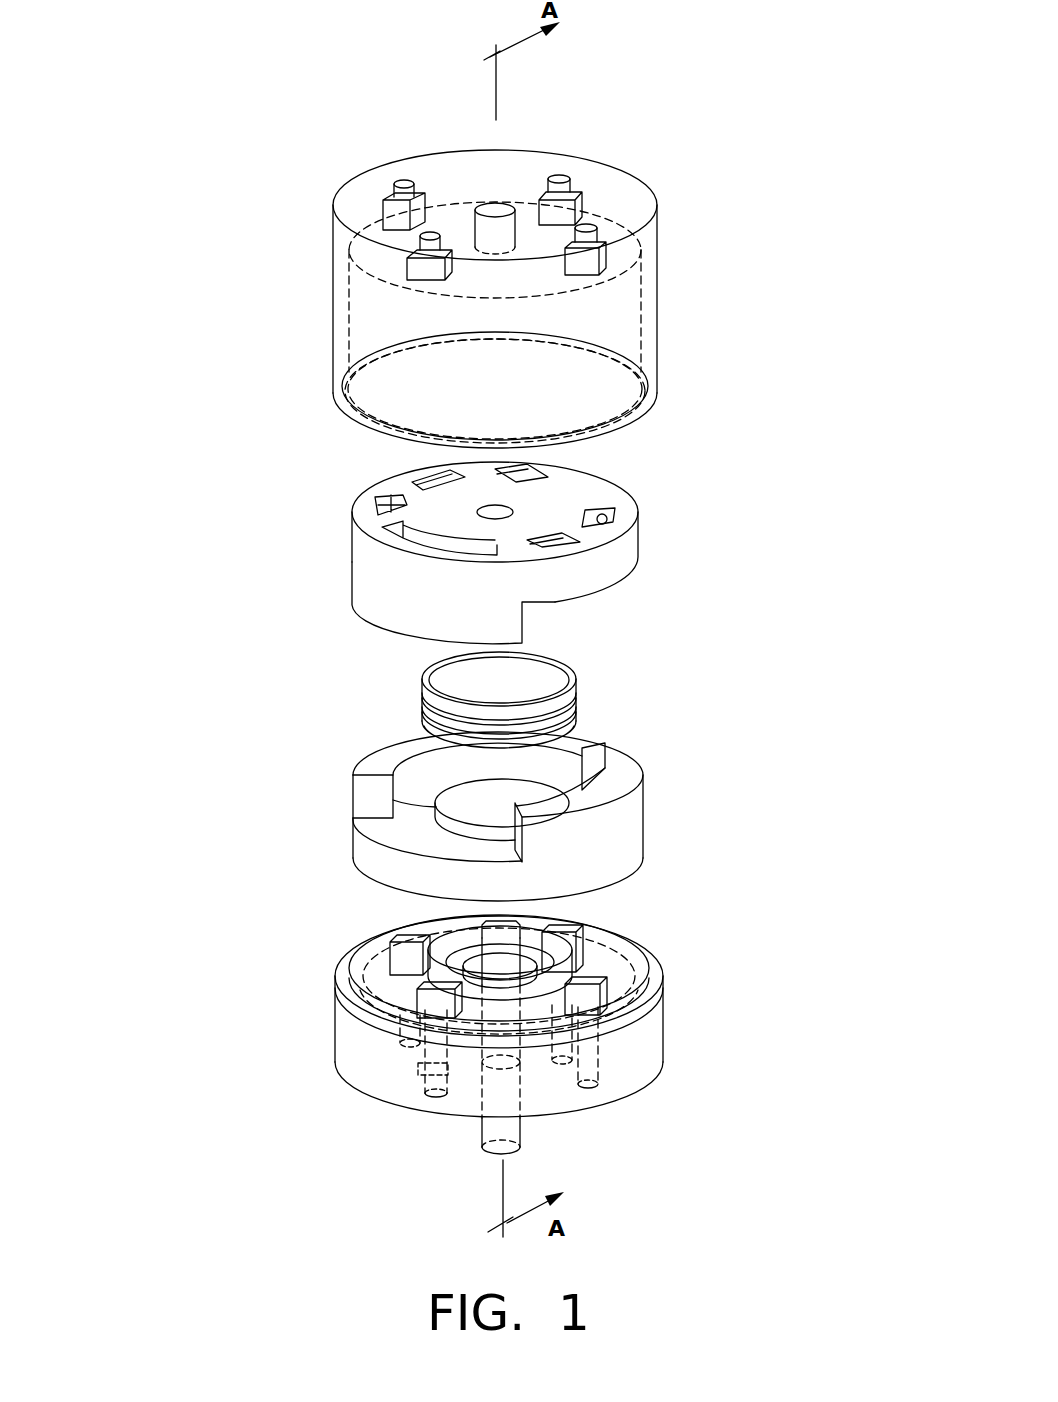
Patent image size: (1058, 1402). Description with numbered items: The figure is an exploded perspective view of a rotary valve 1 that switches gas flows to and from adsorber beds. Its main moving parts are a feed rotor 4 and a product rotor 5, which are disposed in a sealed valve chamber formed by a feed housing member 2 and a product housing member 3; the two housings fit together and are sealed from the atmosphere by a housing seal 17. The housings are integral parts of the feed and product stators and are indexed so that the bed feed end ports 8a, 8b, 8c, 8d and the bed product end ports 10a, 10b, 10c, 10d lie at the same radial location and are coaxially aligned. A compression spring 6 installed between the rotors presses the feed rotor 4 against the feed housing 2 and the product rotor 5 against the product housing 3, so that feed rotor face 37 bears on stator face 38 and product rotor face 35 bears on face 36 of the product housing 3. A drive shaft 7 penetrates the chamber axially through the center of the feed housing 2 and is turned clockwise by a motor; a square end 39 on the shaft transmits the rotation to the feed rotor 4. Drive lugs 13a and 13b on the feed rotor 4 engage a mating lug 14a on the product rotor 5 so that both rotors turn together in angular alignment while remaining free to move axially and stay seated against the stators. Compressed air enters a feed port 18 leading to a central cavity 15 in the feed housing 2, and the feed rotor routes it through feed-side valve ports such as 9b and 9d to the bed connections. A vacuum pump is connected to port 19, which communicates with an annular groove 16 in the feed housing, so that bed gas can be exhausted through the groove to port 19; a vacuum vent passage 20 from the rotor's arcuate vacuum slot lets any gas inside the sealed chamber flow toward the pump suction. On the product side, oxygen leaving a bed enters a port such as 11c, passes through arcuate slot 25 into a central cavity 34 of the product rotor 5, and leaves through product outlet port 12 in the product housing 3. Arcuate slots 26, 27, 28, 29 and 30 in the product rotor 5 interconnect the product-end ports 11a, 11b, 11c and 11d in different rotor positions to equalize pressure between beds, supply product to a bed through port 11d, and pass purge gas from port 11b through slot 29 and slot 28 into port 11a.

The rotary valve 1 is at (238, 602).
The feed housing member 2 is at (355, 1093).
The product housing member 3 is at (333, 354).
The feed rotor 4 is at (373, 851).
The product rotor 5 is at (552, 582).
The compression spring 6 is at (578, 667).
The drive shaft 7 is at (480, 1137).
The bed feed end port 8a is at (594, 1092).
The bed feed end port 8b is at (595, 1087).
The bed feed end port 8c is at (435, 1100).
The bed feed end port 8d is at (402, 1045).
The port in feed housing 9b is at (607, 977).
The port in feed housing 9d is at (407, 940).
The bed product end port 10a is at (560, 178).
The bed product end port 10b is at (584, 226).
The bed product end port 10c is at (420, 235).
The bed product end port 10d is at (400, 179).
The valve port in product housing 11a is at (580, 193).
The valve port in product housing 11b is at (575, 251).
The valve port in product housing 11c is at (407, 258).
The valve port in product housing 11d is at (383, 205).
The product outlet port 12 is at (494, 206).
The drive lug 13a is at (368, 802).
The drive lug 13b is at (623, 760).
The mating lug 14a is at (403, 595).
The central cavity 15 is at (550, 950).
The annular groove 16 is at (572, 955).
The housing seal 17 is at (350, 998).
The feed port 18 is at (577, 978).
The vacuum port 19 is at (418, 1057).
The vacuum vent passage 20 is at (550, 783).
The arcuate slot 25 is at (403, 527).
The arcuate slot 26 is at (380, 505).
The arcuate slot 27 is at (432, 480).
The arcuate slot 28 is at (543, 473).
The arcuate slot 29 is at (603, 519).
The arcuate slot 30 is at (573, 540).
The central cavity 34 is at (567, 513).
The product rotor face 35 is at (515, 509).
The product housing face 36 is at (530, 282).
The feed rotor face 37 is at (368, 878).
The stator face 38 is at (372, 970).
The square end 39 is at (517, 916).